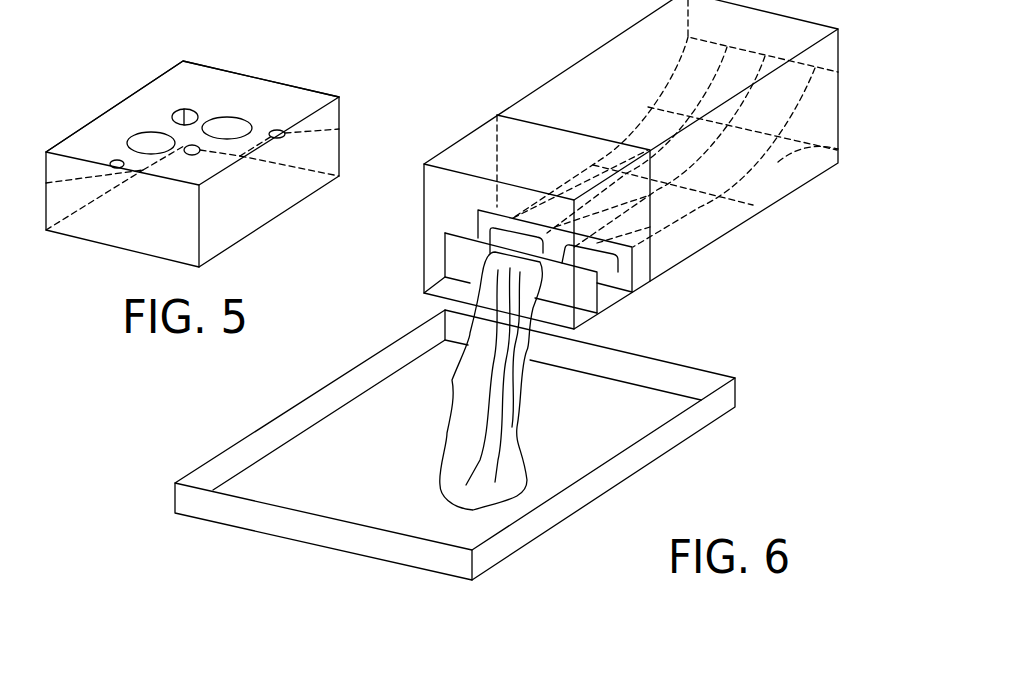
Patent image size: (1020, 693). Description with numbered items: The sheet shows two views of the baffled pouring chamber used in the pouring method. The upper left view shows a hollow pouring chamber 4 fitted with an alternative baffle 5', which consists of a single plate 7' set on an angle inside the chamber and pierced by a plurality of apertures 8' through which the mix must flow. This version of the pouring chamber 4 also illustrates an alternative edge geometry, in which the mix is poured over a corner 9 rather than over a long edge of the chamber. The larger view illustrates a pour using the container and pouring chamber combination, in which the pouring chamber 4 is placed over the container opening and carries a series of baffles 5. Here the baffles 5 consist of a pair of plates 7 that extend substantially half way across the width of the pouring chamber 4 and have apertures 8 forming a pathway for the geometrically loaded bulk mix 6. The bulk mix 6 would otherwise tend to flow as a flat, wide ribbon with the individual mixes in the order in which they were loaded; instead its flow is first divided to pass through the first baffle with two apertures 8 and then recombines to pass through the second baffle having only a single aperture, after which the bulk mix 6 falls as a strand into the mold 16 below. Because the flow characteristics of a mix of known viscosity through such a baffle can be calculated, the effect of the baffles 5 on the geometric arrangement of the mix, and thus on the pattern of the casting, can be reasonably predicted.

In FIG. 5, the pouring chamber 4 is at (341, 105).
In FIG. 6, the pouring chamber 4 is at (424, 164).
In FIG. 6, the baffles 5 is at (631, 146).
In FIG. 6, the geometrically loaded bulk mix 6 is at (509, 433).
In FIG. 6, the plates 7 is at (478, 273).
In FIG. 6, the apertures 8 is at (576, 269).
In FIG. 5, the corner 9 is at (183, 61).
In FIG. 6, the mold 16 is at (258, 428).
In FIG. 5, the alternative baffle 5' is at (247, 82).
In FIG. 5, the single plate 7' is at (159, 96).
In FIG. 5, the apertures 8' is at (109, 123).